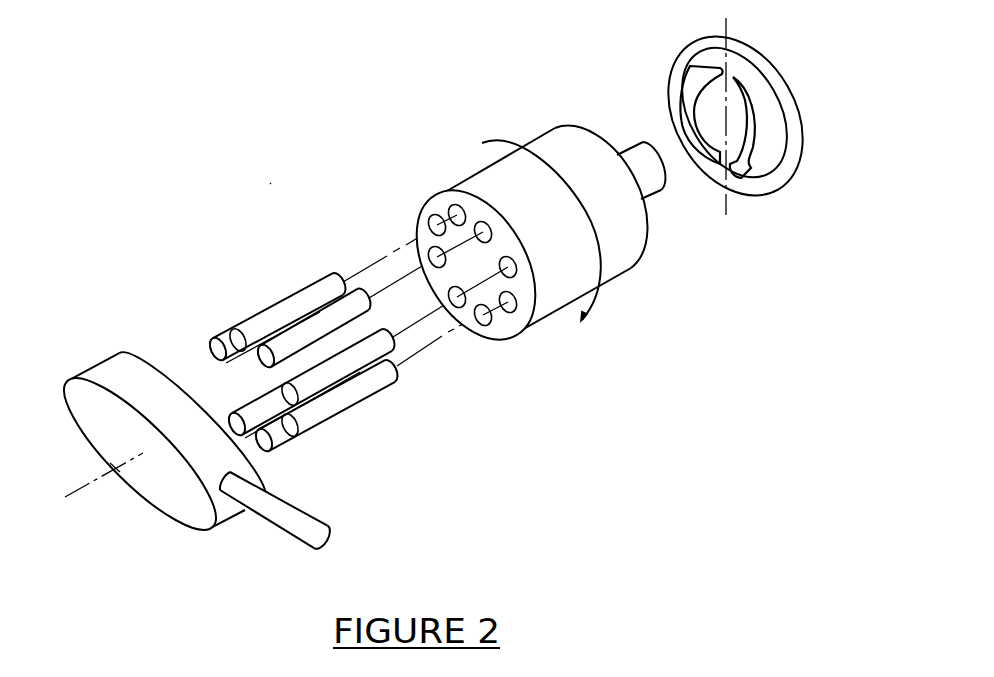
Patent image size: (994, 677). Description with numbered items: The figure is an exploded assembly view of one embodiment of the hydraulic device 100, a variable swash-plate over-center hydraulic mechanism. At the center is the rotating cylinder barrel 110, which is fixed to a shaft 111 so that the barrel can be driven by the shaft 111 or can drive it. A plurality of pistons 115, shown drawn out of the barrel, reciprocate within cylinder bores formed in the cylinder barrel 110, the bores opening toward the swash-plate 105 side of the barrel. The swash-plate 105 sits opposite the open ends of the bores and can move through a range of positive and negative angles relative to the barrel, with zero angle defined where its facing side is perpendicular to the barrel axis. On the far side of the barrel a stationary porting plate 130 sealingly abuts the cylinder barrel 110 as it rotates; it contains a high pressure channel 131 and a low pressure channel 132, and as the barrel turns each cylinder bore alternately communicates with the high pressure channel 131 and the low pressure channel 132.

The hydraulic device 100 is at (280, 190).
The swash-plate 105 is at (167, 477).
The cylinder barrel 110 is at (633, 264).
The shaft 111 is at (648, 192).
The pistons 115 is at (315, 328).
The porting plate 130 is at (740, 186).
The high pressure channel 131 is at (743, 167).
The low pressure channel 132 is at (698, 72).